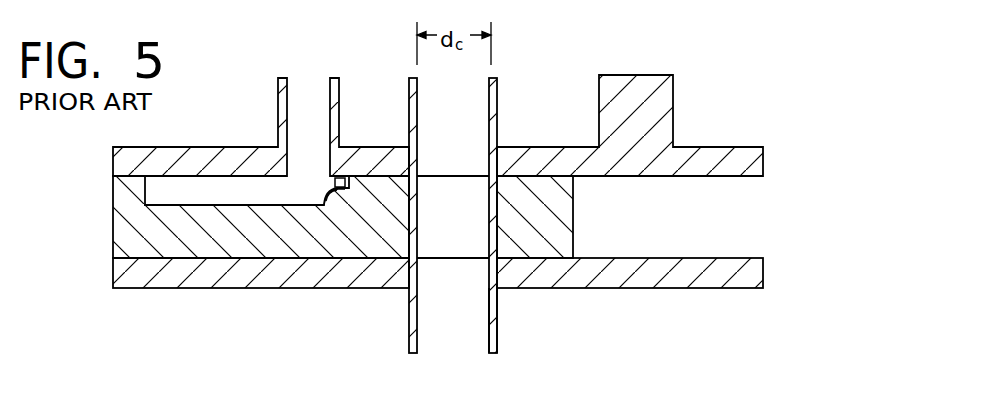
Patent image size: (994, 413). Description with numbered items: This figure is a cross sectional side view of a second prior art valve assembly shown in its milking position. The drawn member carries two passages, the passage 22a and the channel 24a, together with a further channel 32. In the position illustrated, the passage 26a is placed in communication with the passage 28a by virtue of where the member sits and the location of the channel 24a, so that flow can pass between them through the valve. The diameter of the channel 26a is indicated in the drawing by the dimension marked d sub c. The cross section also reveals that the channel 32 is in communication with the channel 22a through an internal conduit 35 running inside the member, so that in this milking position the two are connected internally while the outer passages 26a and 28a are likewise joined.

The passage 22a is at (167, 198).
The channel 32 is at (338, 180).
The internal conduit 35 is at (344, 192).
The passage 26a is at (490, 97).
The passage 28a is at (488, 330).
The channel 24a is at (491, 220).